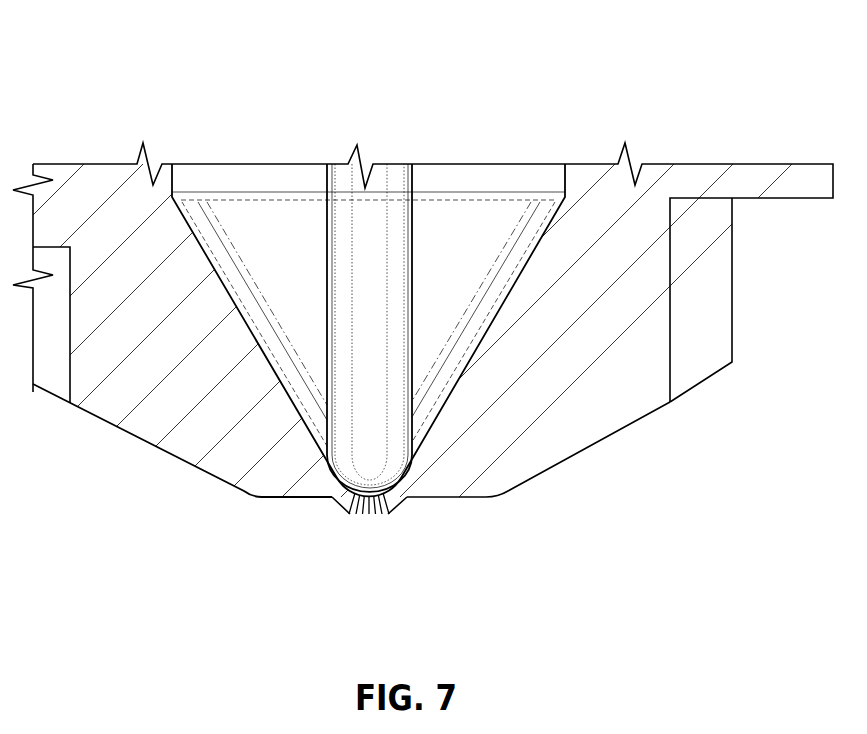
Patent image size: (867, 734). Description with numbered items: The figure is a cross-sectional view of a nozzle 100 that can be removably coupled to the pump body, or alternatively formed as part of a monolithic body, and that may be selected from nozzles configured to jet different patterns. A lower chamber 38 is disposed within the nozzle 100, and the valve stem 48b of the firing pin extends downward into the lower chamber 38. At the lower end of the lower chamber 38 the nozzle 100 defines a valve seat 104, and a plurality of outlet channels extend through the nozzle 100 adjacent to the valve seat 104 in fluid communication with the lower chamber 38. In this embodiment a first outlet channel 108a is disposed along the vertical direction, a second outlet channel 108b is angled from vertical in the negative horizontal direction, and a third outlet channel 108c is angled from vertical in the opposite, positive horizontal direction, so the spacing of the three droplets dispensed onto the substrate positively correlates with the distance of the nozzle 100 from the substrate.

The nozzle 100 is at (108, 136).
The lower chamber 38 is at (465, 242).
The valve stem 48b is at (342, 278).
The valve seat 104 is at (408, 472).
The first outlet channel 108a is at (352, 515).
The second outlet channel 108b is at (375, 518).
The third outlet channel 108c is at (388, 515).